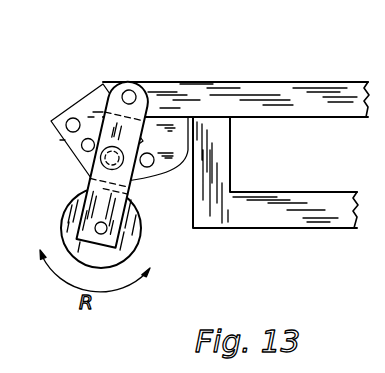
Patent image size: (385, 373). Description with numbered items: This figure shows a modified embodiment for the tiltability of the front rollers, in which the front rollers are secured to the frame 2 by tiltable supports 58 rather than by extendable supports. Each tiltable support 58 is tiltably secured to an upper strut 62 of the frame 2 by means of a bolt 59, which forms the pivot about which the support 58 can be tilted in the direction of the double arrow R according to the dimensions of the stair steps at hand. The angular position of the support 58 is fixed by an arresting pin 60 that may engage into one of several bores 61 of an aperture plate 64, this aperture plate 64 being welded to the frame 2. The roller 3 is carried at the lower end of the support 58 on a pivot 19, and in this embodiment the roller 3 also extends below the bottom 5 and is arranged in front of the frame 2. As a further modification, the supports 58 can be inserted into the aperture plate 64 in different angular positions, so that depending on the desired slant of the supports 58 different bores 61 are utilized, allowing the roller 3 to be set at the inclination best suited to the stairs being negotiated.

The frame 2 is at (315, 104).
The roller 3 is at (62, 228).
The bottom 5 is at (293, 228).
The pivot pin 19 is at (125, 239).
The tiltable support 58 is at (85, 182).
The bolt 59 is at (129, 92).
The arresting pin 60 is at (132, 182).
The bore 61 is at (80, 144).
The upper strut 62 is at (180, 98).
The aperture plate 64 is at (90, 108).